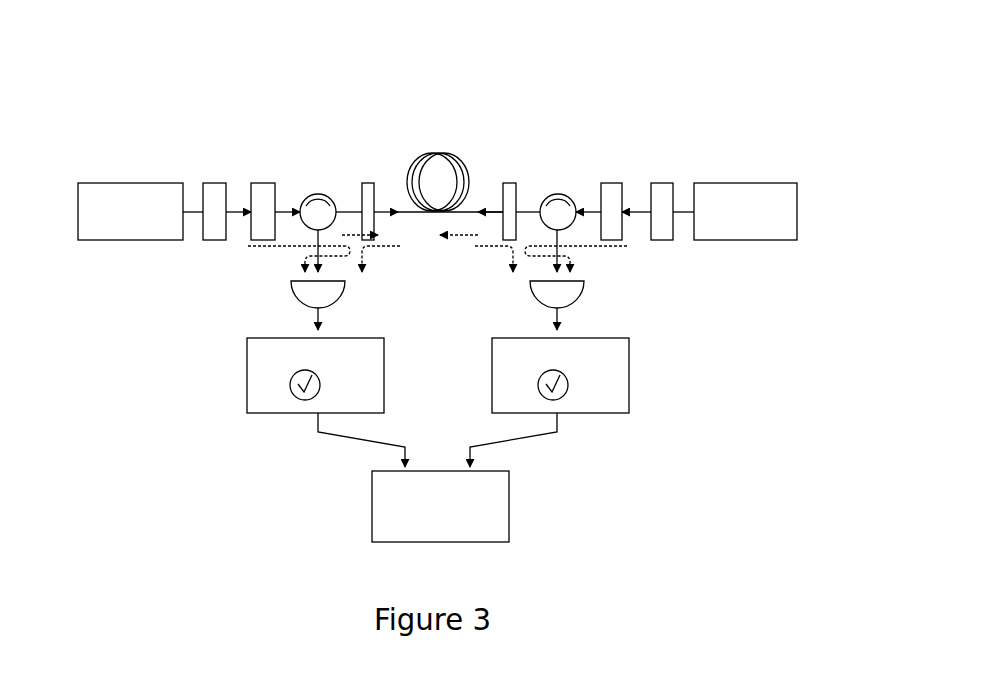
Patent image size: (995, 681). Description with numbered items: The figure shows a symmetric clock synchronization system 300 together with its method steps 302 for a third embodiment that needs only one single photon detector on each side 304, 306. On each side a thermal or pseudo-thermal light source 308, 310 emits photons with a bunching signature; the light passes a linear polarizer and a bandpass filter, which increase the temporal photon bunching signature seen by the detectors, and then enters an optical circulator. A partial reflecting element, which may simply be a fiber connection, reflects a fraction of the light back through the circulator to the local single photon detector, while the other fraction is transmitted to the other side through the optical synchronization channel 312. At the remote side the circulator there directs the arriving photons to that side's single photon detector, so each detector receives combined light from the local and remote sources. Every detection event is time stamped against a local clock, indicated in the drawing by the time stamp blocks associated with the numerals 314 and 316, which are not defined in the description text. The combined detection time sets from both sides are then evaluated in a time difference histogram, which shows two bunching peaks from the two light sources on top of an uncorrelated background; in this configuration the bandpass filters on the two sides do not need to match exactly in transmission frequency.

The symmetric clock synchronization system 300 is at (480, 105).
The method steps 302 is at (242, 312).
The first side 304 is at (291, 186).
The second side 306 is at (567, 186).
The thermal or pseudo-thermal light source 308 is at (115, 175).
The thermal or pseudo-thermal light source 310 is at (738, 182).
The optical synchronization channel 312 is at (408, 160).
The time stamp clock t 314 is at (292, 392).
The time stamp clock t' 316 is at (568, 395).